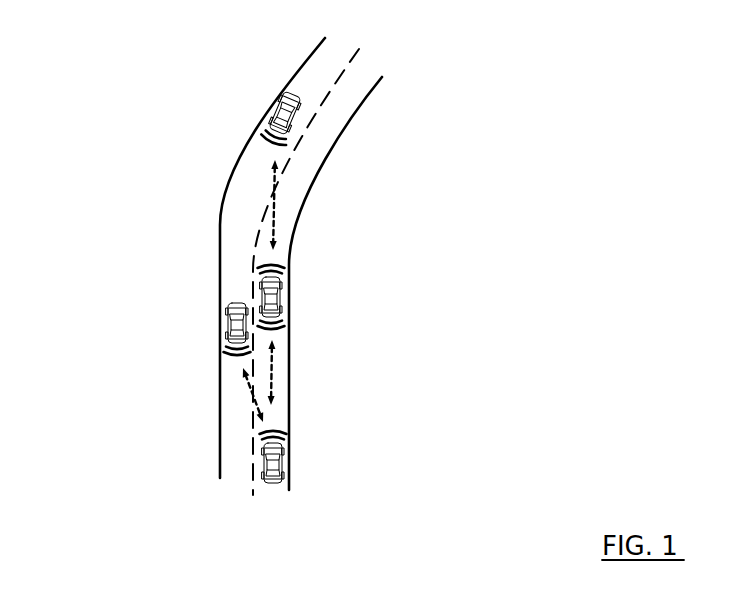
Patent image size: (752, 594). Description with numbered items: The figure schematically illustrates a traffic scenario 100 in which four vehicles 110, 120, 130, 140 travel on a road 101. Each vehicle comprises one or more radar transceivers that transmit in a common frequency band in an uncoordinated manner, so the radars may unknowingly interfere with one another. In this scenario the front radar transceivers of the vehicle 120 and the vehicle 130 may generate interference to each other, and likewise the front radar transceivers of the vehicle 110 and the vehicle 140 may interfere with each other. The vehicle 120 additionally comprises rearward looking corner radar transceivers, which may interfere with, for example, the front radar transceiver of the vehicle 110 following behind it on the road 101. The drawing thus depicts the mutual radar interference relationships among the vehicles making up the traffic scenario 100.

The traffic scenario 100 is at (122, 59).
The road 101 is at (317, 178).
The vehicle 110 is at (283, 478).
The vehicle 120 is at (281, 292).
The vehicle 130 is at (276, 114).
The vehicle 140 is at (228, 322).